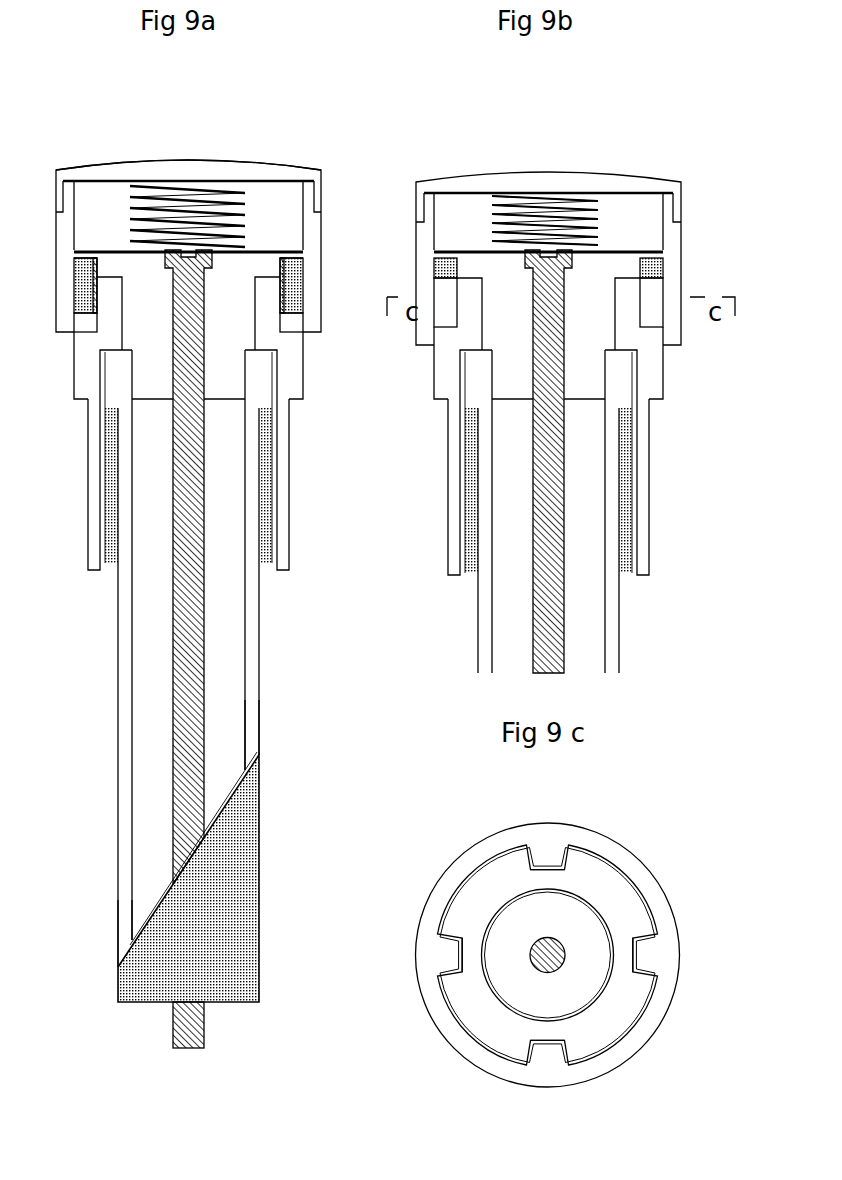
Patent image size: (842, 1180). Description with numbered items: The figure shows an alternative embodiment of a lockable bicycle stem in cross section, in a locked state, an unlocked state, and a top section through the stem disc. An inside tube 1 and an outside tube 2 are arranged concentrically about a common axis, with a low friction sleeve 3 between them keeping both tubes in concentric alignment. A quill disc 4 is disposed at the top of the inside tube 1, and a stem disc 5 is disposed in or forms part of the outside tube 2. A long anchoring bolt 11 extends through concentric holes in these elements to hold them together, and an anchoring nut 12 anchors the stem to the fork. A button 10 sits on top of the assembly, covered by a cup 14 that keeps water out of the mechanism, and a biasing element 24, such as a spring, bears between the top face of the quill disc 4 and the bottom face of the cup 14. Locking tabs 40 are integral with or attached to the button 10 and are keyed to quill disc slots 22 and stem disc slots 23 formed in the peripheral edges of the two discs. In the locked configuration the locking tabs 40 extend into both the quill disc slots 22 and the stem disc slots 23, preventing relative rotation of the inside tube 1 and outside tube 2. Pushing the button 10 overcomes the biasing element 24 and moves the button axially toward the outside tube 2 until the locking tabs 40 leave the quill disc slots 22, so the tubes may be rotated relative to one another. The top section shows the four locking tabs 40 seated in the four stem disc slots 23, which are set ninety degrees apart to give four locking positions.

In FIG. 9a, the inside tube 1 is at (250, 710).
In FIG. 9a, the outside tube 2 is at (282, 417).
In FIG. 9b, the outside tube 2 is at (548, 462).
In FIG. 9a, the low friction sleeve 3 is at (265, 553).
In FIG. 9b, the low friction sleeve 3 is at (548, 511).
In FIG. 9a, the quill disc 4 is at (264, 266).
In FIG. 9b, the quill disc 4 is at (548, 461).
In FIG. 9c, the quill disc 4 is at (572, 982).
In FIG. 9a, the stem disc 5 is at (268, 325).
In FIG. 9b, the stem disc 5 is at (548, 338).
In FIG. 9c, the stem disc 5 is at (612, 892).
In FIG. 9a, the button 10 is at (320, 208).
In FIG. 9b, the button 10 is at (548, 258).
In FIG. 9c, the button 10 is at (468, 860).
In FIG. 9a, the anchoring bolt 11 is at (190, 1032).
In FIG. 9c, the anchoring bolt 11 is at (533, 963).
In FIG. 9a, the anchoring nut 12 is at (187, 940).
In FIG. 9a, the cup 14 is at (190, 167).
In FIG. 9a, the quill disc slots 22 is at (303, 254).
In FIG. 9b, the quill disc slots 22 is at (445, 265).
In FIG. 9a, the stem disc slots 23 is at (292, 320).
In FIG. 9c, the stem disc slots 23 is at (522, 848).
In FIG. 9a, the biasing element 24 is at (150, 206).
In FIG. 9b, the biasing element 24 is at (545, 220).
In FIG. 9a, the locking tabs 40 is at (292, 293).
In FIG. 9b, the locking tabs 40 is at (443, 302).
In FIG. 9c, the locking tabs 40 is at (545, 855).